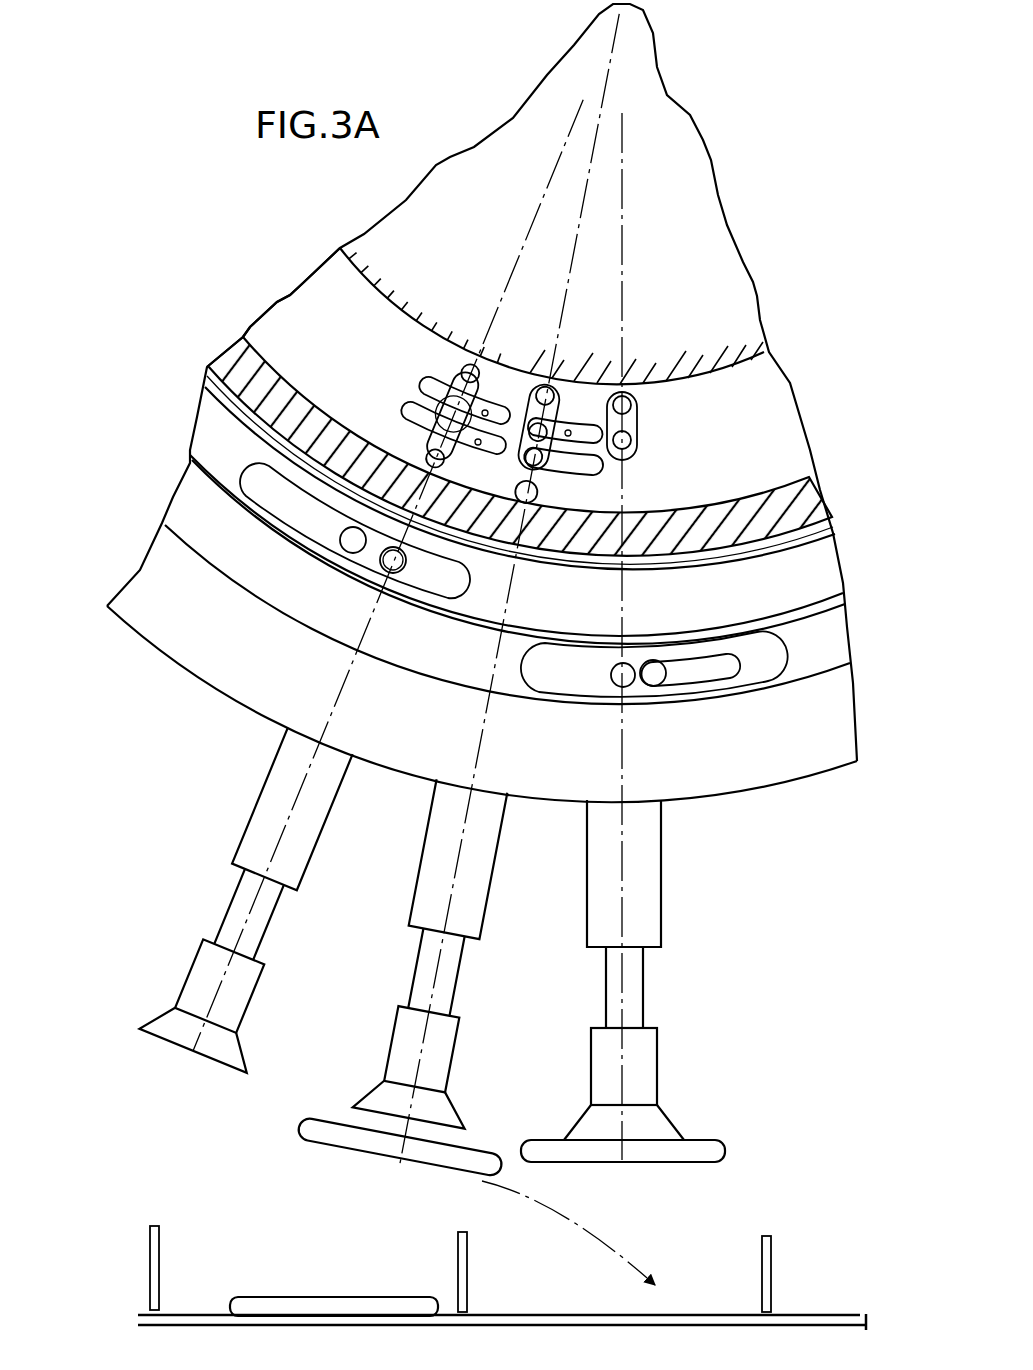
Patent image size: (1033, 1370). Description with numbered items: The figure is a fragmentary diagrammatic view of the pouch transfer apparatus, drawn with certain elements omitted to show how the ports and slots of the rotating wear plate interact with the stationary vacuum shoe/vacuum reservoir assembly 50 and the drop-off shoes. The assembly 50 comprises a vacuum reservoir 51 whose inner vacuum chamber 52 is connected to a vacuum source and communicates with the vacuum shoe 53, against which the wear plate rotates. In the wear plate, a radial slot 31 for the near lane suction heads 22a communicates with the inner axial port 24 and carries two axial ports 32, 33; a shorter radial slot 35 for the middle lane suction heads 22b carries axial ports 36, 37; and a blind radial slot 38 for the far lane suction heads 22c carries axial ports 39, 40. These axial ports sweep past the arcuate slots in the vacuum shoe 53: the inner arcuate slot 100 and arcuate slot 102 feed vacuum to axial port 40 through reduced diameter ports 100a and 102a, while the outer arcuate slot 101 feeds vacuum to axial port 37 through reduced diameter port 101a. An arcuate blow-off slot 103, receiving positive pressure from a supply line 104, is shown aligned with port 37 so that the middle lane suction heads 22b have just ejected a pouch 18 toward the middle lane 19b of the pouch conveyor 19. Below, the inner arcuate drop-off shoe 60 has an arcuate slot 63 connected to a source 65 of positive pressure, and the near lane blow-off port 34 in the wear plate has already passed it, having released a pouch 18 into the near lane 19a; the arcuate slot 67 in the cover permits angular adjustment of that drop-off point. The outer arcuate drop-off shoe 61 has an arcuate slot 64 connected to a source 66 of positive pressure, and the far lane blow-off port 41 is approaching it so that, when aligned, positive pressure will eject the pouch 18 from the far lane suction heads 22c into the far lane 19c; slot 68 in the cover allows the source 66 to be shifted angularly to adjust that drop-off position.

The vacuum shoe/vacuum reservoir assembly 50 is at (752, 268).
The vacuum reservoir 51 is at (742, 343).
The vacuum chamber 52 is at (768, 388).
The vacuum shoe 53 is at (295, 300).
The inner arcuate drop-off shoe 60 is at (813, 564).
The outer arcuate drop-off shoe 61 is at (823, 634).
The arcuate slot 67 is at (248, 480).
The slot 68 is at (788, 673).
The arcuate slot 64 is at (697, 682).
The source of positive pressure 65 is at (346, 538).
The source of positive pressure 66 is at (655, 688).
The arcuate slot 63 is at (373, 583).
The near lane blow-off port 34 is at (403, 562).
The far lane blow-off port 41 is at (618, 688).
The radial slot 31 is at (470, 364).
The axial port 32 is at (490, 385).
The axial port 33 is at (430, 455).
The radial slot 35 is at (513, 470).
The axial port 36 is at (548, 396).
The axial port 37 is at (530, 470).
The radial slot 38 is at (645, 458).
The axial port 39 is at (632, 400).
The axial port 40 is at (633, 428).
The inner axial port 24 is at (440, 412).
The inner arcuate slot 100 is at (430, 395).
The outer arcuate slot 101 is at (410, 408).
The arcuate slot 102 is at (573, 422).
The arcuate blow-off slot 103 is at (588, 474).
The supply line 104 is at (534, 492).
The reduced diameter port 100a is at (507, 410).
The reduced diameter port 101a is at (503, 440).
The reduced diameter port 102a is at (600, 385).
The near lane suction heads 22a is at (200, 965).
The middle lane suction heads 22b is at (395, 1050).
The far lane suction heads 22c is at (652, 1082).
The pouch 18 is at (614, 1164).
The pouch conveyor 19 is at (110, 1320).
The near lane 19a is at (291, 1290).
The middle lane 19b is at (601, 1305).
The far lane 19c is at (856, 1291).